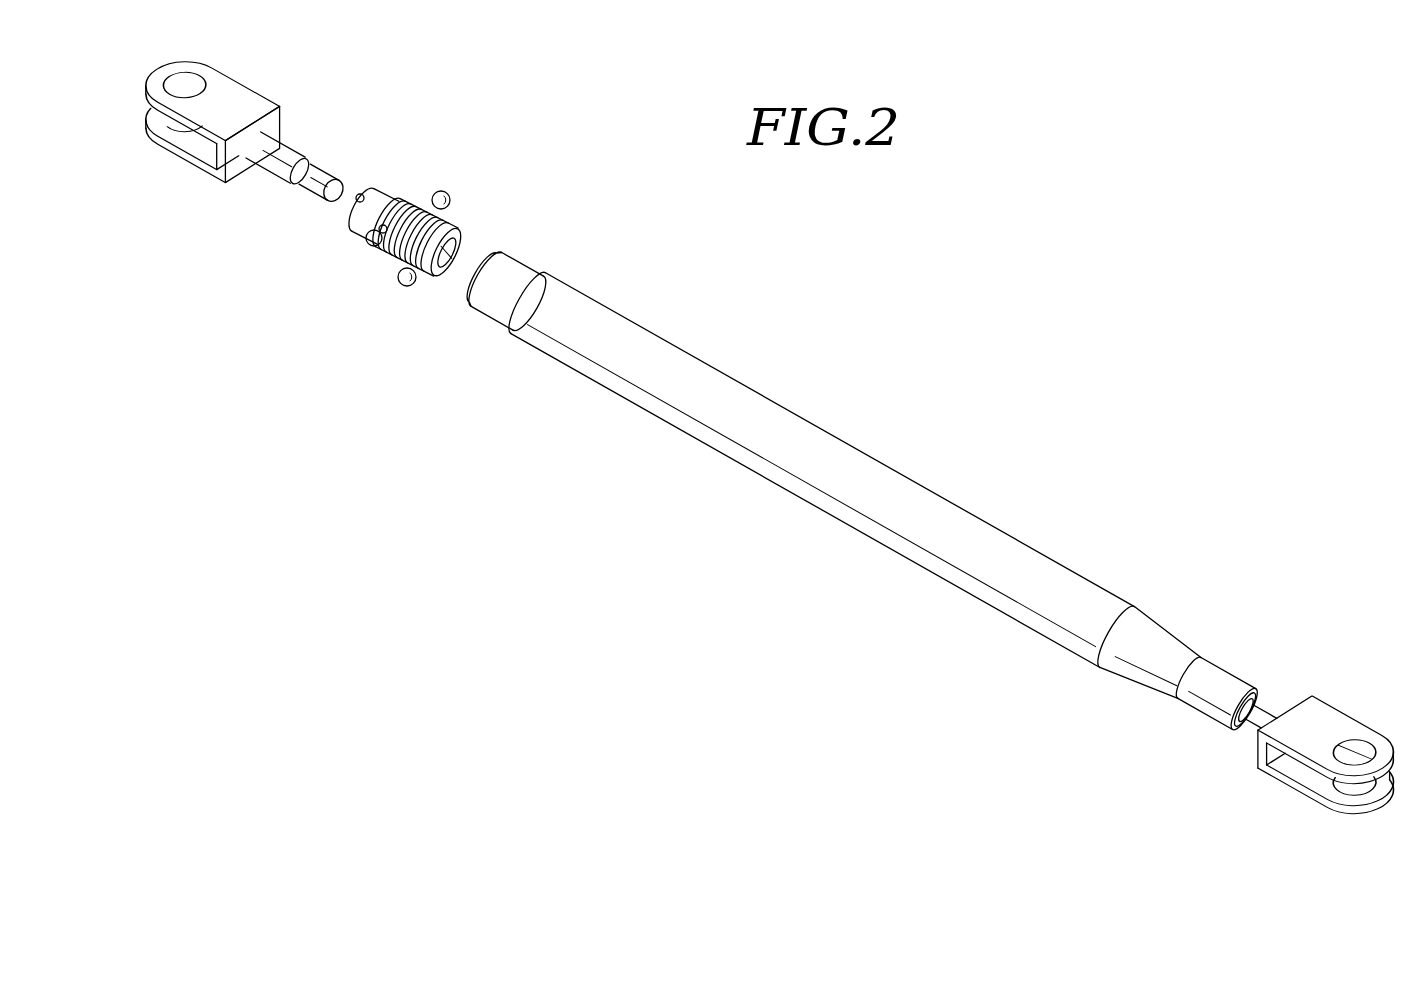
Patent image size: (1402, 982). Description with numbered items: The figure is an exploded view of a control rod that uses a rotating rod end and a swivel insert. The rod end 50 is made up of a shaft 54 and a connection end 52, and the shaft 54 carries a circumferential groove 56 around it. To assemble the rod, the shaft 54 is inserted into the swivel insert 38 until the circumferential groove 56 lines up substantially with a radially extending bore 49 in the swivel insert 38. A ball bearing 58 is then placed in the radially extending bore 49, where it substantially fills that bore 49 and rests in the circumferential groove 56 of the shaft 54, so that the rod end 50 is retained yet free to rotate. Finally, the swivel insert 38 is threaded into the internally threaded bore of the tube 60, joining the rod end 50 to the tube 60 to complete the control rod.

The swivel insert 38 is at (486, 188).
The radially extending bore 49 is at (390, 197).
The rod end 50 is at (287, 72).
The connection end 52 is at (168, 148).
The shaft 54 is at (293, 148).
The circumferential groove 56 is at (298, 163).
The ball bearing 58 is at (442, 190).
The tube 60 is at (676, 296).